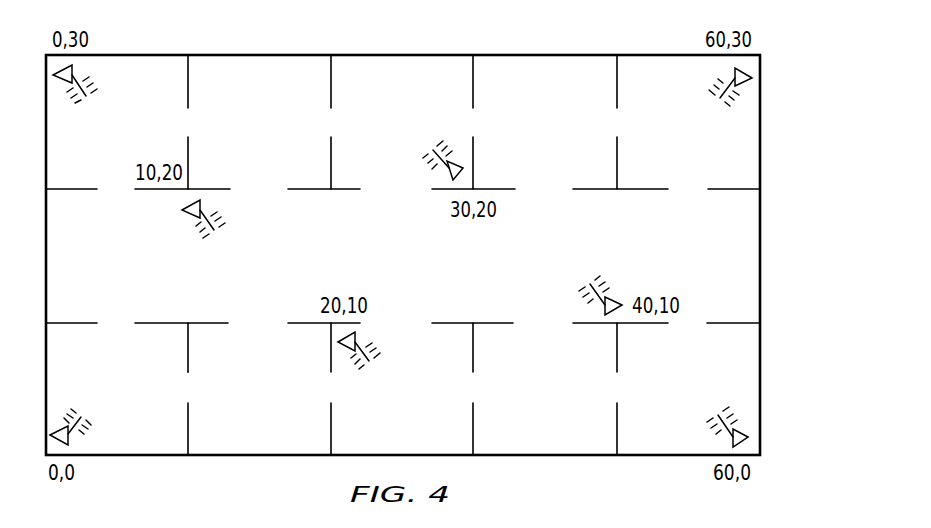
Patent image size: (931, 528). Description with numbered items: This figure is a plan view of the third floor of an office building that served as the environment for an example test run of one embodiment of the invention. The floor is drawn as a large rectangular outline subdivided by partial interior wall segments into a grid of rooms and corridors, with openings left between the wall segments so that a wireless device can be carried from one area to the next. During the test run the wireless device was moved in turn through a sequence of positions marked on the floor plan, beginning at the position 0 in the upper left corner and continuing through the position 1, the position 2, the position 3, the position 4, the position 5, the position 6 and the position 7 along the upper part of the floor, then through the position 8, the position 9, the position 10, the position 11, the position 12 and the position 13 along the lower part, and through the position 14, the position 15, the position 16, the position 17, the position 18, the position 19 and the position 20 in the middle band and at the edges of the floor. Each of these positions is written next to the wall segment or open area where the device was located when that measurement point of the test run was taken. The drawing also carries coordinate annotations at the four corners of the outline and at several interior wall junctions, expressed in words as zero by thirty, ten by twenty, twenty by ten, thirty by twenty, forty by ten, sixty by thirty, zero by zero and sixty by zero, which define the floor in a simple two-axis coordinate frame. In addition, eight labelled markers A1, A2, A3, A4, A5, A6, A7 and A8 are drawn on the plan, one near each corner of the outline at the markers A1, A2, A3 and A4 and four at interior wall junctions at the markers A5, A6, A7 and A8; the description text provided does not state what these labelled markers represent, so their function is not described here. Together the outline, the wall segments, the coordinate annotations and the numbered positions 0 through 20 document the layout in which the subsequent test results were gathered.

The position 0 is at (96, 108).
The position 1 is at (182, 163).
The position 2 is at (225, 96).
The position 3 is at (347, 122).
The position 4 is at (511, 81).
The position 5 is at (620, 163).
The position 6 is at (655, 96).
The position 7 is at (734, 175).
The position 8 is at (625, 429).
The position 9 is at (510, 416).
The position 10 is at (472, 347).
The position 11 is at (227, 416).
The position 12 is at (314, 429).
The position 13 is at (181, 347).
The position 14 is at (71, 204).
The position 15 is at (71, 307).
The position 16 is at (218, 255).
The position 17 is at (324, 320).
The position 18 is at (471, 192).
The position 19 is at (620, 304).
The position 20 is at (733, 308).
The access point antenna A1 is at (54, 73).
The access point antenna A2 is at (750, 76).
The access point antenna A3 is at (748, 437).
The access point antenna A4 is at (50, 438).
The access point antenna A5 is at (338, 349).
The access point antenna A6 is at (463, 163).
The access point antenna A7 is at (187, 217).
The access point antenna A8 is at (612, 314).